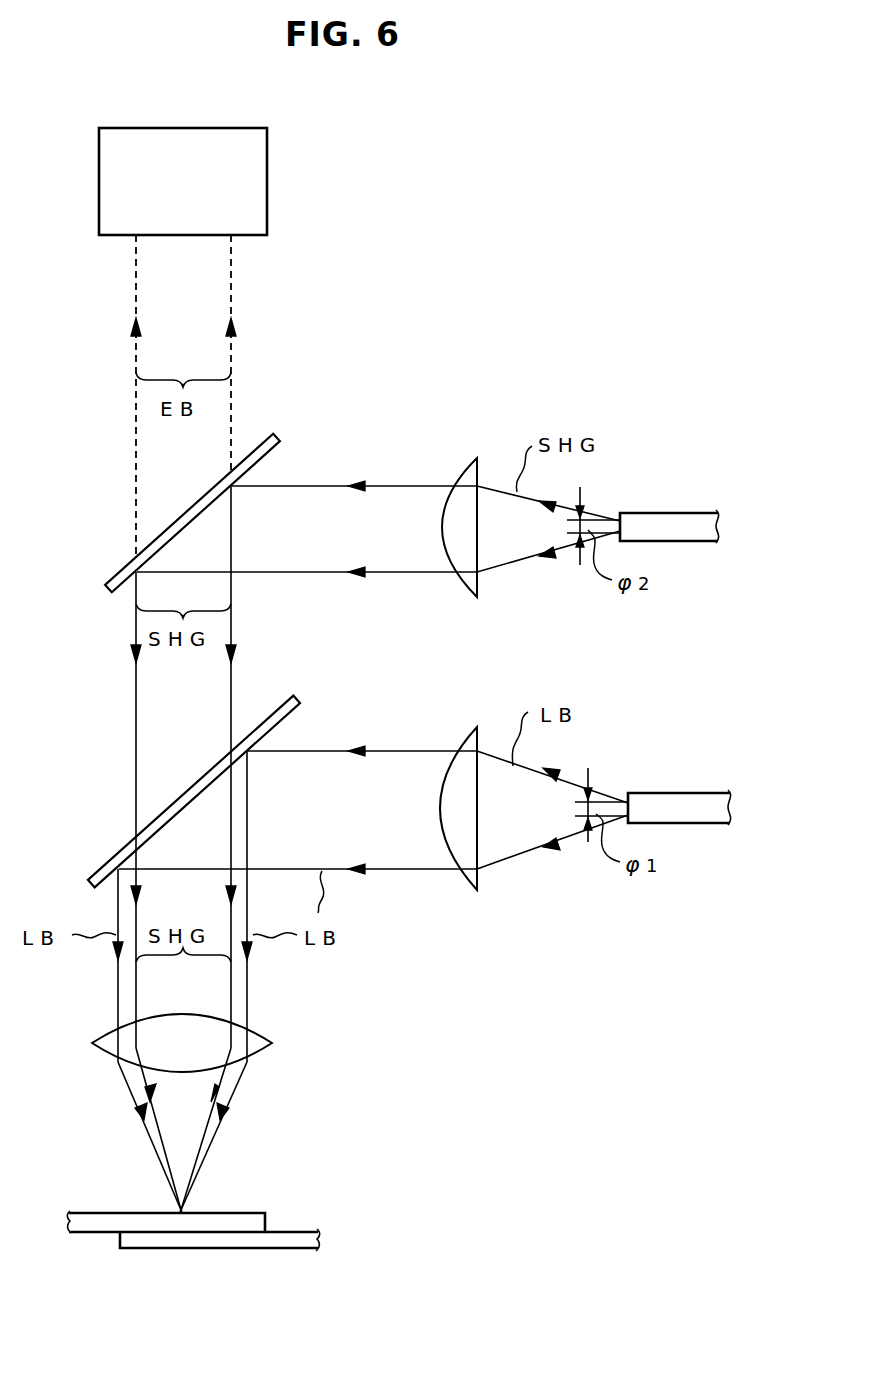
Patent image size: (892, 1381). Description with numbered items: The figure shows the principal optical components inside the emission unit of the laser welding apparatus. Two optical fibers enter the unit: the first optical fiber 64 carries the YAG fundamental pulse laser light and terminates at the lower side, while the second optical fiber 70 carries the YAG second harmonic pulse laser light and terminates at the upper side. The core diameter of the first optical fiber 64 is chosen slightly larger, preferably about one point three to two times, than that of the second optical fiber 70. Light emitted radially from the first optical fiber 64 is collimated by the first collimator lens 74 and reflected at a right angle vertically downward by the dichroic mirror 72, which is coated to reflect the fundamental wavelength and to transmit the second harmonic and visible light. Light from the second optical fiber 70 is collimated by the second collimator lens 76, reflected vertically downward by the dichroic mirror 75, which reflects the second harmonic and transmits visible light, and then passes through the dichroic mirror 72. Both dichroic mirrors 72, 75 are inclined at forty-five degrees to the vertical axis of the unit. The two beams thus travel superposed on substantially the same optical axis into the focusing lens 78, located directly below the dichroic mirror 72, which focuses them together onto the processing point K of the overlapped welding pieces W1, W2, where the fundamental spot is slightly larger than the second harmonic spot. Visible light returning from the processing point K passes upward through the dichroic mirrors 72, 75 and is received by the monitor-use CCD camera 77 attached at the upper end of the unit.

The CCD camera 77 is at (268, 183).
The dichroic mirror 75 is at (108, 590).
The second collimator lens 76 is at (477, 457).
The second optical fiber 70 is at (673, 513).
The dichroic mirror 72 is at (92, 883).
The first collimator lens 74 is at (475, 726).
The first optical fiber 64 is at (681, 792).
The focusing lens 78 is at (102, 1040).
The welding piece W1 is at (94, 1212).
The welding piece W2 is at (282, 1251).
The processing point K is at (183, 1212).